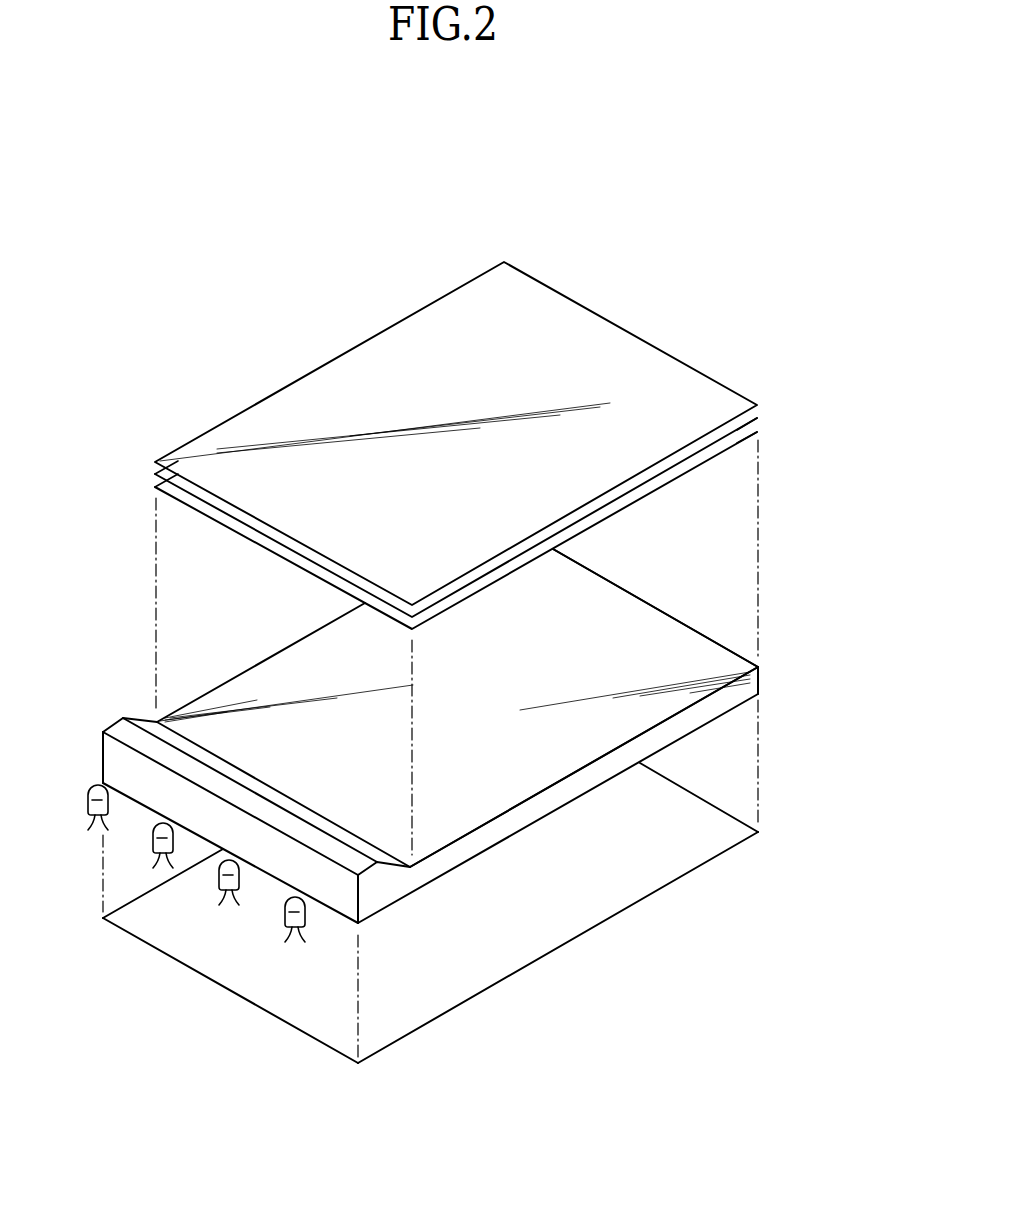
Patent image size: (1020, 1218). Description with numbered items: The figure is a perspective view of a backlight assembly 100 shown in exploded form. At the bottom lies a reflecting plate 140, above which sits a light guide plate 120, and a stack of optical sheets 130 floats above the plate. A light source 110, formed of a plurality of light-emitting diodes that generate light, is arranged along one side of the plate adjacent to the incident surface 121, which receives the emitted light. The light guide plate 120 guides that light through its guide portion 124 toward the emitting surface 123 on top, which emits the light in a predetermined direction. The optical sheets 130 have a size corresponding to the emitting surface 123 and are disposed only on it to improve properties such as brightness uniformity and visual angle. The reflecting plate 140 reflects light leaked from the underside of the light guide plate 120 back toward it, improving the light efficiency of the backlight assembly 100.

The backlight assembly 100 is at (433, 179).
The light source 110 is at (287, 918).
The light guide plate 120 is at (501, 805).
The incident surface 121 is at (115, 764).
The emitting surface 123 is at (619, 605).
The guide portion 124 is at (380, 881).
The optical sheets 130 is at (762, 400).
The reflecting plate 140 is at (740, 834).